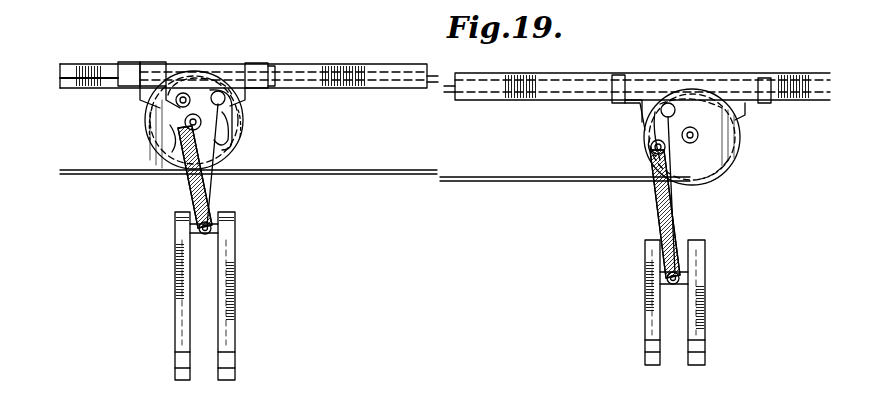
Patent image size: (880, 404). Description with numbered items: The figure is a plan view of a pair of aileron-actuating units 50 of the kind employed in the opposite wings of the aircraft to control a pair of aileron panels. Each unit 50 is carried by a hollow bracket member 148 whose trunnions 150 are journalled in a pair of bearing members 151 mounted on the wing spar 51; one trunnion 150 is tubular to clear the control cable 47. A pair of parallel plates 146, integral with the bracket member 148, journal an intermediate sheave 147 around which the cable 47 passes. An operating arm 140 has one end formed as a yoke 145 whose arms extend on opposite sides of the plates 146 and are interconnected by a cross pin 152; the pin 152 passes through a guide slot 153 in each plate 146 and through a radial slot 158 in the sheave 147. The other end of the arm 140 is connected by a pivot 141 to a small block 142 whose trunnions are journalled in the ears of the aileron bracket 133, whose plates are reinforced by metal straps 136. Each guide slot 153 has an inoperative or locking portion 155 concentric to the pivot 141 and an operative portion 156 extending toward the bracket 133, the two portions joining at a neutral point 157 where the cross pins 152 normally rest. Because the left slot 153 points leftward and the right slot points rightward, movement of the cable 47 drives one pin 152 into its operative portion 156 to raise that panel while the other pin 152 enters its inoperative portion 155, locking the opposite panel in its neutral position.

The control cable 47 is at (400, 170).
The aileron-actuating unit 50 is at (138, 135).
The main spar 51 is at (392, 64).
The aileron bracket 133 is at (162, 277).
The metal straps 136 is at (175, 366).
The operating arm 140 is at (188, 190).
The pivot 141 is at (212, 222).
The small block 142 is at (212, 238).
The yoke 145 is at (160, 150).
The parallel plates 146 is at (160, 106).
The sheave 147 is at (172, 160).
The hollow bracket member 148 is at (156, 64).
The trunnions 150 is at (118, 76).
The bearing members 151 is at (143, 64).
The cross pin 152 is at (188, 94).
The guide slot 153 is at (228, 120).
The inoperative portion 155 is at (240, 70).
The operative portion 156 is at (230, 142).
The neutral point 157 is at (226, 96).
The radial slot 158 is at (190, 78).